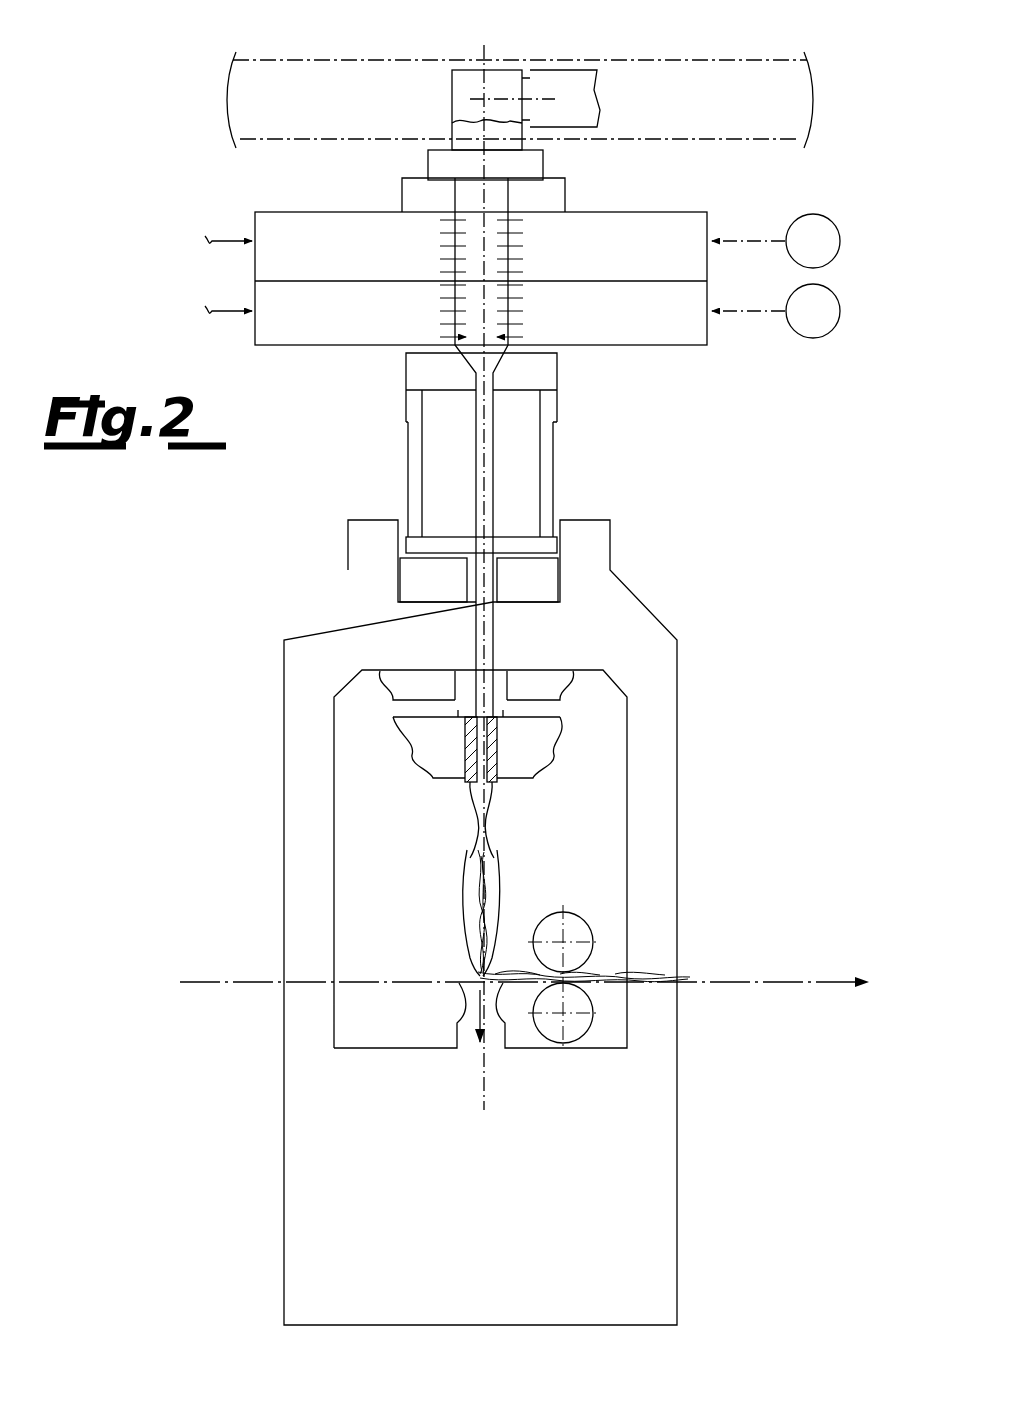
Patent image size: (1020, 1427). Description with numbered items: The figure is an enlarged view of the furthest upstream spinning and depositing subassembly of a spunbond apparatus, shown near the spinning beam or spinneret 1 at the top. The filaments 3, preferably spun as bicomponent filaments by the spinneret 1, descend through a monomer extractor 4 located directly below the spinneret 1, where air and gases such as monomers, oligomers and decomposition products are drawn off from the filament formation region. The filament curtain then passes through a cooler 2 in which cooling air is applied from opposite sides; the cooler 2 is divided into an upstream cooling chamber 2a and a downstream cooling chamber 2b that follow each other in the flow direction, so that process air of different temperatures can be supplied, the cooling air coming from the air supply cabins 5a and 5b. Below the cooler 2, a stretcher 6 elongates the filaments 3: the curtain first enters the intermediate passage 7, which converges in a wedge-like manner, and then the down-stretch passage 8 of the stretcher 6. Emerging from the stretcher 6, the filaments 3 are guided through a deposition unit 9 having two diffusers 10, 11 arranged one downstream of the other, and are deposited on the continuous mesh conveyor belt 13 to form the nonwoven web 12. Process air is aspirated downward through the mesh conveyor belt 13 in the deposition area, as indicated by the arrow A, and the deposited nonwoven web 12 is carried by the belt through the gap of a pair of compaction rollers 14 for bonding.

The spinneret 1 is at (468, 66).
The cooler 2 is at (502, 249).
The upstream cooling chamber 2a is at (463, 243).
The downstream cooling chamber 2b is at (463, 311).
The filaments 3 is at (462, 861).
The monomer extractor 4 is at (414, 183).
The air supply cabin 5a is at (664, 264).
The air supply cabin 5b is at (664, 332).
The stretcher 6 is at (528, 672).
The intermediate passage 7 is at (487, 476).
The down-stretch passage 8 is at (462, 742).
The deposition unit 9 is at (430, 839).
The diffuser 10 is at (500, 814).
The diffuser 11 is at (510, 889).
The nonwoven web 12 is at (672, 969).
The mesh conveyor belt 13 is at (392, 985).
The compaction rollers 14 is at (600, 912).
The arrow A is at (493, 1048).